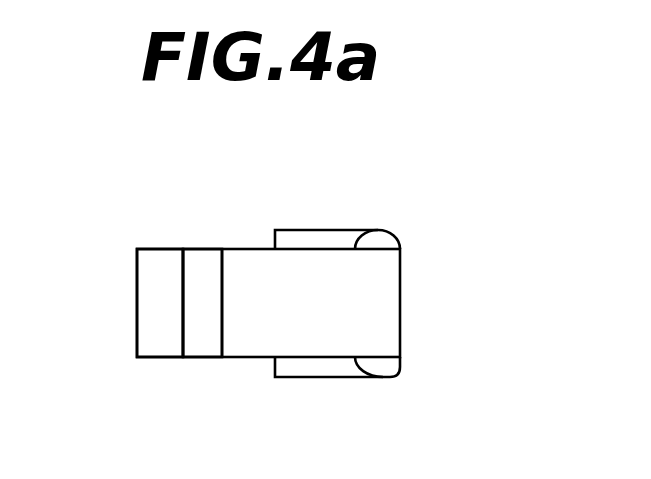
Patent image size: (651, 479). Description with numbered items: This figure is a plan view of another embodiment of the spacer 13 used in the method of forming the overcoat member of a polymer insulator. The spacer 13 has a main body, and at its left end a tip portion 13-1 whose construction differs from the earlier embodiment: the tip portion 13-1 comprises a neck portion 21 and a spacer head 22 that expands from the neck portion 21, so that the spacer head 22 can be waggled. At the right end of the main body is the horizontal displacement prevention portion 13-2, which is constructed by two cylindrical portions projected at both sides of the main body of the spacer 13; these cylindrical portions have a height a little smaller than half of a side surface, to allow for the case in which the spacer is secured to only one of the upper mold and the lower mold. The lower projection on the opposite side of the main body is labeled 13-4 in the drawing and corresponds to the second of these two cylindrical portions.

The spacer 13 is at (411, 313).
The tip portion 13-1 is at (182, 357).
The horizontal displacement prevention portion 13-2 is at (384, 231).
The lower latch tab 13-4 is at (328, 371).
The neck portion 21 is at (200, 253).
The spacer head 22 is at (143, 273).